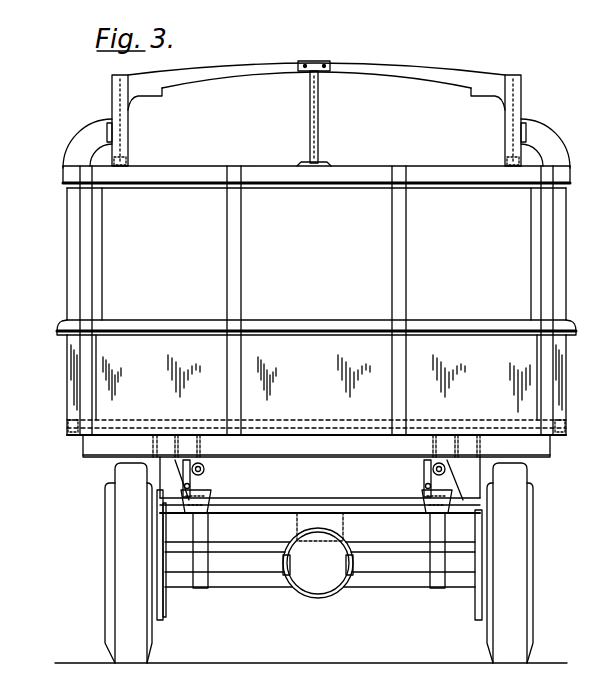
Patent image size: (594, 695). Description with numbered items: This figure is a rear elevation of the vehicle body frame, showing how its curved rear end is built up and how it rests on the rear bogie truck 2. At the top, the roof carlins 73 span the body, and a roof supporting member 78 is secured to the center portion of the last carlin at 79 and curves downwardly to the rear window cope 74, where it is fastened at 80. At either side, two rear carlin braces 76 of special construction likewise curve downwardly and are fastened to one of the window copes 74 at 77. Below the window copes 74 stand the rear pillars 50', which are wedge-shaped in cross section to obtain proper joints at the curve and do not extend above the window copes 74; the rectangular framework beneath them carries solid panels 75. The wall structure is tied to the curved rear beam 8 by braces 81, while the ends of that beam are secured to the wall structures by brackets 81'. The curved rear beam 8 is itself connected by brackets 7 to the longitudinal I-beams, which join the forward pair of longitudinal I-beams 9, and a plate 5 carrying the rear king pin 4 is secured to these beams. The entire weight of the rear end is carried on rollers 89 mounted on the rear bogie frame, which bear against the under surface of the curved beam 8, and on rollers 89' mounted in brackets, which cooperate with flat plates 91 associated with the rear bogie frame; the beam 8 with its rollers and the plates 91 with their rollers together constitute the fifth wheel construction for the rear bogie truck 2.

The roof carlin 73 is at (247, 64).
The securing point of roof supporting member 79 is at (326, 61).
The roof supporting member 78 is at (318, 128).
The fastening point of roof supporting member 80 is at (309, 163).
The rear carlin brace 76 is at (112, 95).
The fastening point of rear carlin brace 77 is at (128, 157).
The window cope 74 is at (152, 177).
The rear pillar 50' is at (315, 254).
The solid panel 75 is at (316, 377).
The brace 81 is at (316, 408).
The bracket 81' is at (297, 395).
The curved rear beam 8 is at (305, 455).
The bracket 7 is at (173, 472).
The roller 89 is at (314, 467).
The roller 89' is at (316, 492).
The plate 5 is at (337, 502).
The longitudinal I-beam 9 is at (239, 525).
The flat plate 91 is at (247, 510).
The rear king pin 4 is at (334, 530).
The rear bogie truck 2 is at (260, 530).